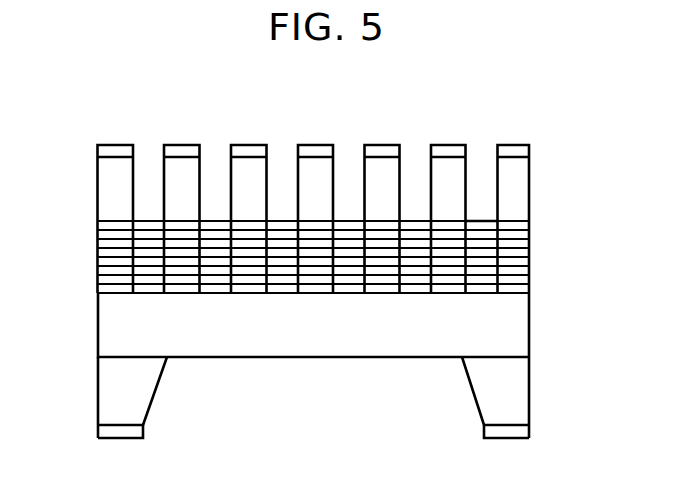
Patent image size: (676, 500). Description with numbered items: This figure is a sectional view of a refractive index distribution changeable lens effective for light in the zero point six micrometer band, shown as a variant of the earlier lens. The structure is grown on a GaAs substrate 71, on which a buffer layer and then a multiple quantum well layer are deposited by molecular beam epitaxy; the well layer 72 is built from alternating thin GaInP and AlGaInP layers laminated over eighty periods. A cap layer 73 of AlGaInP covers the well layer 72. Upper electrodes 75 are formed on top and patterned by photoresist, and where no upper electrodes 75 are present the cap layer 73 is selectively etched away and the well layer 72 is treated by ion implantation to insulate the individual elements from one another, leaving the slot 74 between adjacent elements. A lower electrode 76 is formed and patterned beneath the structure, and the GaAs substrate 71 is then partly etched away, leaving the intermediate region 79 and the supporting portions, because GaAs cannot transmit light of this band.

The GaAs substrate 71 is at (107, 385).
The well layer 72 is at (543, 220).
The cap layer 73 is at (522, 195).
The slot 74 is at (480, 220).
The upper electrodes 75 is at (525, 150).
The lower electrode 76 is at (518, 428).
The yoke 79 is at (517, 325).